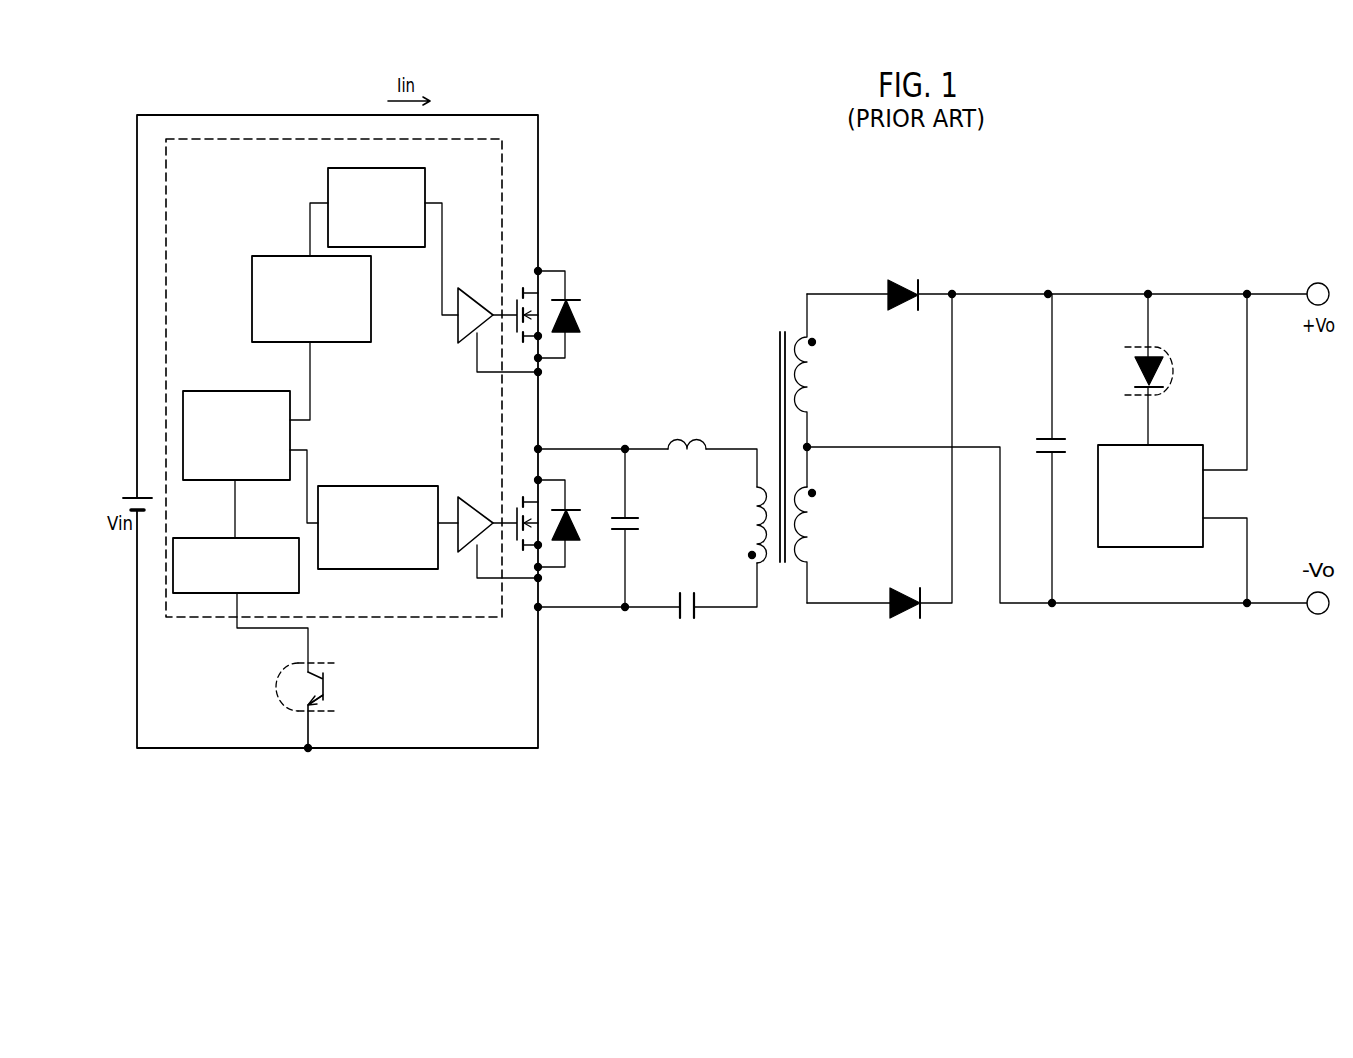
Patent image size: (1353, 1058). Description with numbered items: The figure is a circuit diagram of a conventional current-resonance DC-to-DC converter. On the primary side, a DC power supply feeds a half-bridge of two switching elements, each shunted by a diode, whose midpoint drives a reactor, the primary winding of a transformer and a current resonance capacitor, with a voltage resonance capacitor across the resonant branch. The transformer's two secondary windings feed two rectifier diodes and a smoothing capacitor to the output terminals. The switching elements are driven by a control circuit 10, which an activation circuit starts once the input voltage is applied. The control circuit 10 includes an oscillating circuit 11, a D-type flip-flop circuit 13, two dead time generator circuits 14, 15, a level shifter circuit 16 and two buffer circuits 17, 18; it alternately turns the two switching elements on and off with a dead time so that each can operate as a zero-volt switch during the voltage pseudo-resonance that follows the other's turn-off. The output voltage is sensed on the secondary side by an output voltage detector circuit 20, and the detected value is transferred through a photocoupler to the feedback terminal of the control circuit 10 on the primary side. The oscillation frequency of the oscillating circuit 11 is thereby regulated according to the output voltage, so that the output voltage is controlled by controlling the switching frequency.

The control circuit 10 is at (437, 617).
The oscillating circuit 11 is at (207, 538).
The D-type flip-flop circuit 13 is at (230, 391).
The dead time generator circuit 14 is at (393, 486).
The dead time generator circuit 15 is at (252, 297).
The level shifter circuit 16 is at (410, 247).
The buffer circuit 17 is at (476, 497).
The buffer circuit 18 is at (458, 338).
The output voltage detector circuit 20 is at (1184, 445).